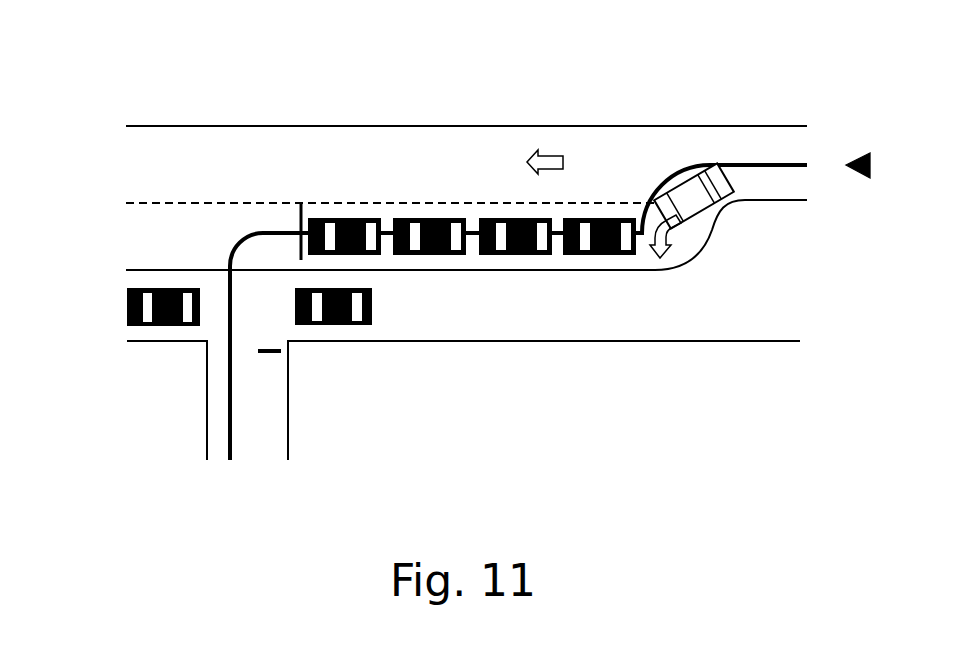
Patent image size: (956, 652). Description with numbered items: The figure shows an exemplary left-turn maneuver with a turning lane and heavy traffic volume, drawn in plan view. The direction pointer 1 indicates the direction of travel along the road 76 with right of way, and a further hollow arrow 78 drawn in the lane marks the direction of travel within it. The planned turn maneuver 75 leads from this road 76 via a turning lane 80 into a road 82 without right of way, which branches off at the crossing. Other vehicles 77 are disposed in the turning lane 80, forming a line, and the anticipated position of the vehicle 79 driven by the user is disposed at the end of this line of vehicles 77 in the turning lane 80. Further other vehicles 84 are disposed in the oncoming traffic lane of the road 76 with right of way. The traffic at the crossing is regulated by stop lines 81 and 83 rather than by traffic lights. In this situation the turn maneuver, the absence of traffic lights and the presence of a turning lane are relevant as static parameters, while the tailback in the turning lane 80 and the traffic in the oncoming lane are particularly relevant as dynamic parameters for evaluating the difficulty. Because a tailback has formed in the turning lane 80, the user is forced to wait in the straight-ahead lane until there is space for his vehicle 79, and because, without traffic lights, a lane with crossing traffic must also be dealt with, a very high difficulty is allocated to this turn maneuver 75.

The direction pointer 1 is at (850, 165).
The planned turn maneuver 75 is at (227, 388).
The road with right of way 76 is at (150, 175).
The other vehicles 77 is at (430, 218).
The travel direction arrow 78 is at (550, 150).
The vehicle driven by the user 79 is at (698, 163).
The turning lane 80 is at (685, 245).
The stop line 81 is at (280, 351).
The road without right of way 82 is at (258, 423).
The stop line 83 is at (301, 203).
The other vehicles 84 is at (148, 308).